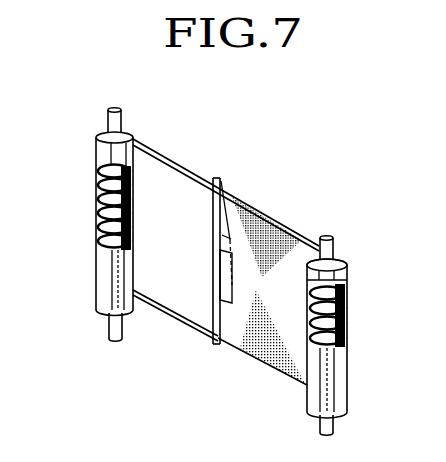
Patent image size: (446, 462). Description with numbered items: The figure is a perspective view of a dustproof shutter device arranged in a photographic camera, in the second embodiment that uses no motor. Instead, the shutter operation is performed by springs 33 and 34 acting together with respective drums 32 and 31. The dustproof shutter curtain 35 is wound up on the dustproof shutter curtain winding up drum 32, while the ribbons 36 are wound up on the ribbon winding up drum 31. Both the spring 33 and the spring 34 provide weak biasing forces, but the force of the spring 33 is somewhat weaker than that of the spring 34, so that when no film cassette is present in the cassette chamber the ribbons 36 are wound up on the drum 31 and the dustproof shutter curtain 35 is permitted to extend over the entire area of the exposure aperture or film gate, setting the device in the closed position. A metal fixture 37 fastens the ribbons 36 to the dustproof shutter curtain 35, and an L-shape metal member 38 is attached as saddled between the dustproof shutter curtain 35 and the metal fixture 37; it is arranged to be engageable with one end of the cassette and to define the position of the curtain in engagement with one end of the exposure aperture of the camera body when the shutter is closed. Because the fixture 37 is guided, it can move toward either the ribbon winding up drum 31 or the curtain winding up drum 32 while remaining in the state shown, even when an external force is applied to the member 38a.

The ribbon winding up drum 31 is at (104, 292).
The dustproof shutter curtain winding up drum 32 is at (333, 381).
The spring 33 is at (343, 293).
The spring 34 is at (97, 200).
The dustproof shutter curtain 35 is at (306, 262).
The ribbons 36 is at (178, 166).
The metal fixture 37 is at (222, 216).
The L-shape metal member 38 is at (222, 272).
The member 38a is at (254, 214).